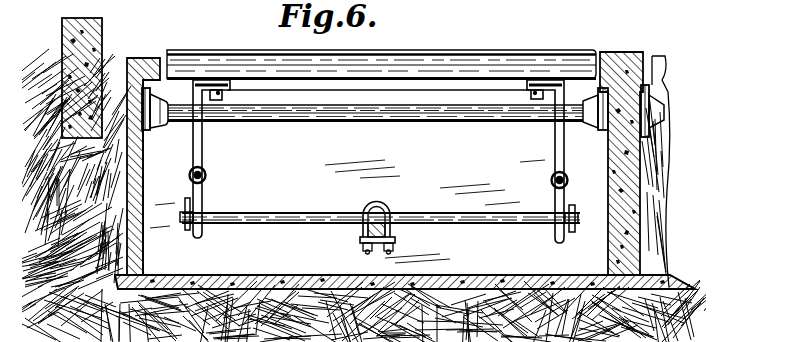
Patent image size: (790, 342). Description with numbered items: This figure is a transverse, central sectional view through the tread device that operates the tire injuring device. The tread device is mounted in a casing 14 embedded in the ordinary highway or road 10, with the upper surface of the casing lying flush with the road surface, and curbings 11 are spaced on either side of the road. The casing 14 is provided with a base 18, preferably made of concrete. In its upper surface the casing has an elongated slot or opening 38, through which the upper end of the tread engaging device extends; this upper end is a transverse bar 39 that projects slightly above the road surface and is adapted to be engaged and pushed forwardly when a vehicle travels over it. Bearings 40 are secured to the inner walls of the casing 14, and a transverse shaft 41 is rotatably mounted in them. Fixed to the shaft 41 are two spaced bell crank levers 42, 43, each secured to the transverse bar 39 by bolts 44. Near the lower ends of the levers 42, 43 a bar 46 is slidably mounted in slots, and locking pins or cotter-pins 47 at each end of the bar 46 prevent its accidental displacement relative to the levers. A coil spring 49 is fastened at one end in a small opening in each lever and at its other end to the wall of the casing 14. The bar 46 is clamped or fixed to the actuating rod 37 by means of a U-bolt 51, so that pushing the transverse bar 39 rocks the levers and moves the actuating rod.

The highway or road 10 is at (117, 58).
The curbing 11 is at (102, 34).
The casing 14 is at (143, 177).
The base 18 is at (260, 275).
The actuating rod 37 is at (396, 239).
The elongated slot or opening 38 is at (598, 80).
The transverse bar 39 is at (386, 63).
The bearing 40 is at (155, 130).
The transverse shaft 41 is at (374, 122).
The bell crank lever 42 is at (202, 148).
The bell crank lever 43 is at (555, 155).
The bolt 44 is at (218, 101).
The bar 46 is at (259, 222).
The locking pin or cotter-pin 47 is at (190, 234).
The coil spring 49 is at (206, 174).
The U-bolt 51 is at (398, 195).